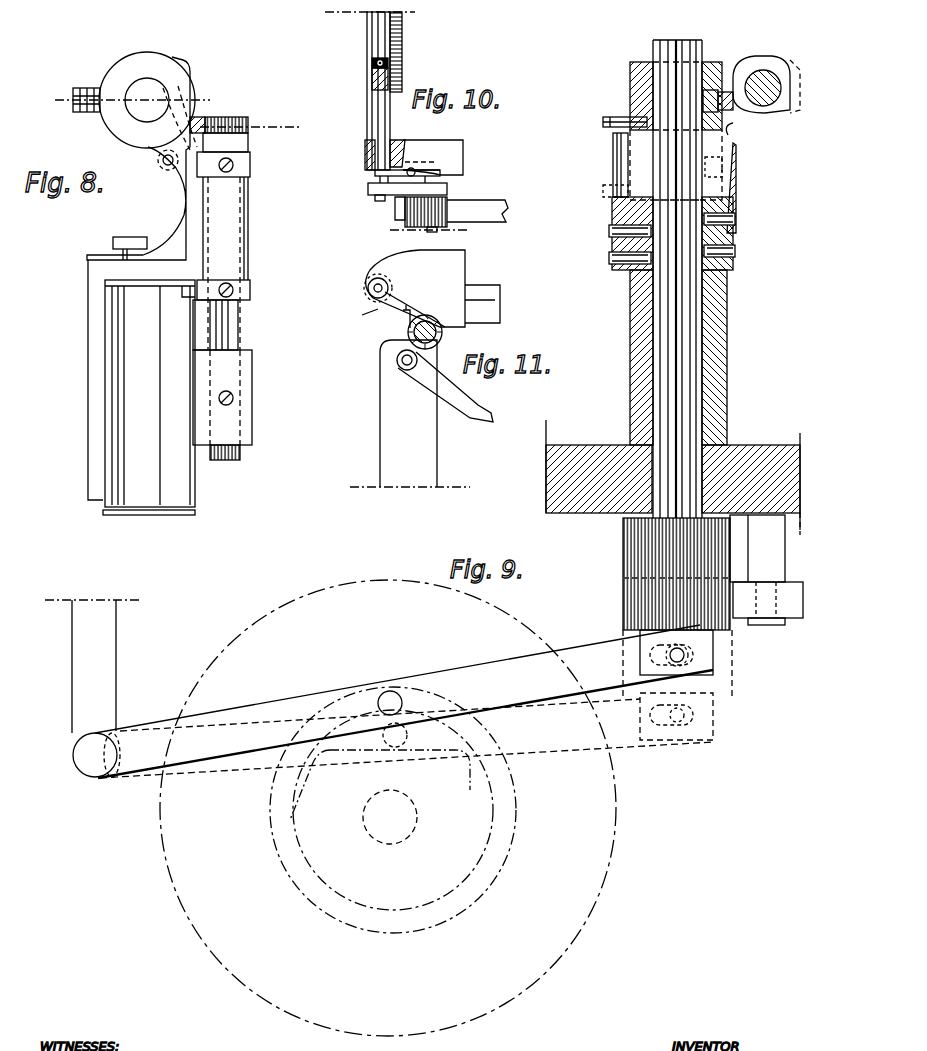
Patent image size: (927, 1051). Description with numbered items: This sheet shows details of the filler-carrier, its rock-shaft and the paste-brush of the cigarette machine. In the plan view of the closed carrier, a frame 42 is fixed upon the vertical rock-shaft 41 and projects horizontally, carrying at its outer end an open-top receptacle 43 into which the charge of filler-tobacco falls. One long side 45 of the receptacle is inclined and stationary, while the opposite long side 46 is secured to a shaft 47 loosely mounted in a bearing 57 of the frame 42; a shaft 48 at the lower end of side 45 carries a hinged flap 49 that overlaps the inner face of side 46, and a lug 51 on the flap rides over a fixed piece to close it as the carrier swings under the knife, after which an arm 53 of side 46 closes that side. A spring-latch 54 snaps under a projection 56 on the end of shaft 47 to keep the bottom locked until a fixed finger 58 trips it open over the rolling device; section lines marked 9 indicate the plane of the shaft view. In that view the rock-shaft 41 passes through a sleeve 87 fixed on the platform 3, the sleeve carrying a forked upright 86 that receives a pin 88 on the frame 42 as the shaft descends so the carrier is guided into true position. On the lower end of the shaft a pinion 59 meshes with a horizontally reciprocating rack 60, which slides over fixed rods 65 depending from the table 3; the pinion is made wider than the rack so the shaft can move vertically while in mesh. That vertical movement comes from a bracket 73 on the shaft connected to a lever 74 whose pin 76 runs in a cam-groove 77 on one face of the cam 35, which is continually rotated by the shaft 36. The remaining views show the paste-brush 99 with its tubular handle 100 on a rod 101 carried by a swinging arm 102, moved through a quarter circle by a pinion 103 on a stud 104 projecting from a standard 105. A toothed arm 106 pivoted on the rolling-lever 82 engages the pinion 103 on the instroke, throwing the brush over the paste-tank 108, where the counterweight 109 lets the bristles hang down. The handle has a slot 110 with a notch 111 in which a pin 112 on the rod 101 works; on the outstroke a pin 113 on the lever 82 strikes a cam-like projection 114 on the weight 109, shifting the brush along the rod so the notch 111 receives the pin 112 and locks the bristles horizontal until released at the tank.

In FIG. 9, the table or platform 3 is at (586, 442).
In FIG. 8, the pawl carrier or arm 9 is at (120, 100).
In FIG. 9, the cam 35 is at (178, 889).
In FIG. 9, the shaft 36 is at (417, 828).
In FIG. 8, the rock-shaft 41 is at (150, 92).
In FIG. 9, the rock-shaft 41 is at (668, 350).
In FIG. 8, the frame 42 is at (87, 390).
In FIG. 9, the frame 42 is at (657, 131).
In FIG. 8, the receptacle 43 is at (155, 514).
In FIG. 8, the stationary long side 45 is at (124, 355).
In FIG. 8, the swinging long side 46 is at (169, 451).
In FIG. 8, the shaft 47 is at (240, 205).
In FIG. 9, the shaft 47 is at (770, 70).
In FIG. 8, the shaft 48 is at (116, 256).
In FIG. 8, the flap or section 49 is at (144, 404).
In FIG. 8, the lug 51 is at (128, 236).
In FIG. 9, the arm 53 is at (677, 279).
In FIG. 8, the spring-latch 54 is at (190, 100).
In FIG. 9, the spring-latch 54 is at (743, 175).
In FIG. 8, the projection 56 is at (200, 120).
In FIG. 9, the projection 56 is at (732, 64).
In FIG. 8, the bearing 57 is at (250, 222).
In FIG. 8, the fixed finger 58 is at (200, 95).
In FIG. 9, the fixed finger 58 is at (722, 188).
In FIG. 9, the pinion 59 is at (623, 552).
In FIG. 9, the rack 60 is at (795, 622).
In FIG. 9, the fixed rods 65 is at (757, 548).
In FIG. 9, the bracket 73 is at (713, 675).
In FIG. 9, the lever 74 is at (466, 668).
In FIG. 9, the pin 76 is at (389, 692).
In FIG. 9, the cam-groove 77 is at (374, 752).
In FIG. 10, the rolling-lever 82 is at (370, 190).
In FIG. 11, the rolling-lever 82 is at (410, 413).
In FIG. 9, the forked upright 86 is at (612, 214).
In FIG. 9, the sleeve 87 is at (658, 357).
In FIG. 9, the projection or pin 88 is at (603, 120).
In FIG. 10, the paste-brush 99 is at (402, 30).
In FIG. 11, the paste-brush 99 is at (390, 275).
In FIG. 10, the tubular handle 100 is at (368, 42).
In FIG. 10, the rod 101 is at (376, 176).
In FIG. 11, the rod 101 is at (366, 287).
In FIG. 10, the swinging arm 102 is at (382, 200).
In FIG. 11, the swinging arm 102 is at (362, 303).
In FIG. 10, the pinion 103 is at (448, 198).
In FIG. 10, the stud 104 is at (468, 231).
In FIG. 11, the standard 105 is at (444, 337).
In FIG. 10, the swinging toothed arm 106 is at (477, 211).
In FIG. 11, the swinging toothed arm 106 is at (470, 400).
In FIG. 11, the paste-tank 108 is at (482, 304).
In FIG. 10, the counterweight 109 is at (462, 148).
In FIG. 11, the counterweight 109 is at (412, 272).
In FIG. 10, the slot 110 is at (398, 56).
In FIG. 10, the notch 111 is at (402, 72).
In FIG. 10, the pin 112 is at (372, 65).
In FIG. 10, the pin 113 is at (412, 170).
In FIG. 11, the pin 113 is at (398, 315).
In FIG. 10, the cam-like projection 114 is at (463, 170).
In FIG. 11, the cam-like projection 114 is at (448, 312).